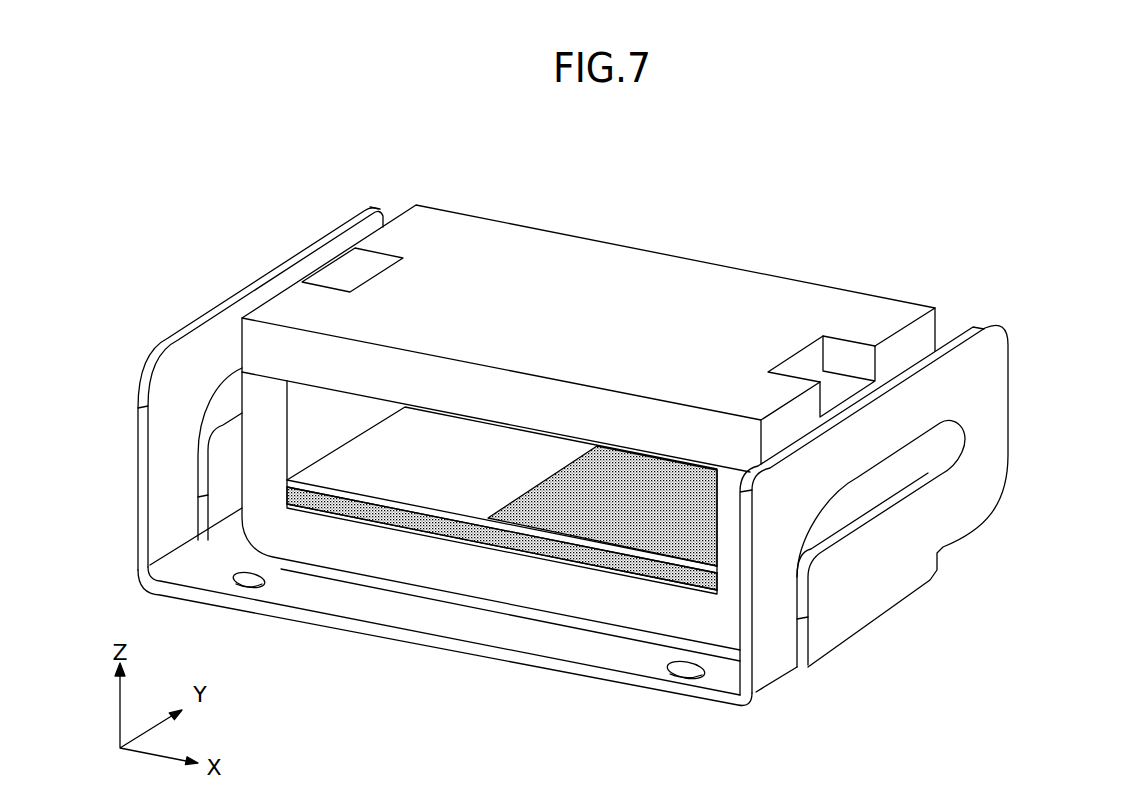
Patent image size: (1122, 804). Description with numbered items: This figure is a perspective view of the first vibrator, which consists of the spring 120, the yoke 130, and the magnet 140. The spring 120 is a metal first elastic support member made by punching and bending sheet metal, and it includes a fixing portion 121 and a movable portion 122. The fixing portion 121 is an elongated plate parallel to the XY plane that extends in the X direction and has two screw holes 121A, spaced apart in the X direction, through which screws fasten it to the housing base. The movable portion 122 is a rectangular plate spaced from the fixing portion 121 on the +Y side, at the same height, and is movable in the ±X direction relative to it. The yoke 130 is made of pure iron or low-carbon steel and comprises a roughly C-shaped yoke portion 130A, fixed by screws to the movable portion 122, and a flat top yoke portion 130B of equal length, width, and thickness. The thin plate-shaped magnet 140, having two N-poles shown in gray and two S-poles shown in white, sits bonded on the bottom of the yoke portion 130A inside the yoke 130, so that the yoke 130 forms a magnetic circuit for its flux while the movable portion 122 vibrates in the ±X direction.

The spring 120 is at (1008, 407).
The fixing portion 121 is at (445, 658).
The screw holes 121A is at (686, 678).
The movable portion 122 is at (247, 543).
The yoke 130 is at (588, 412).
The yoke portion 130A is at (728, 498).
The top yoke portion 130B is at (690, 295).
The magnet 140 is at (570, 562).